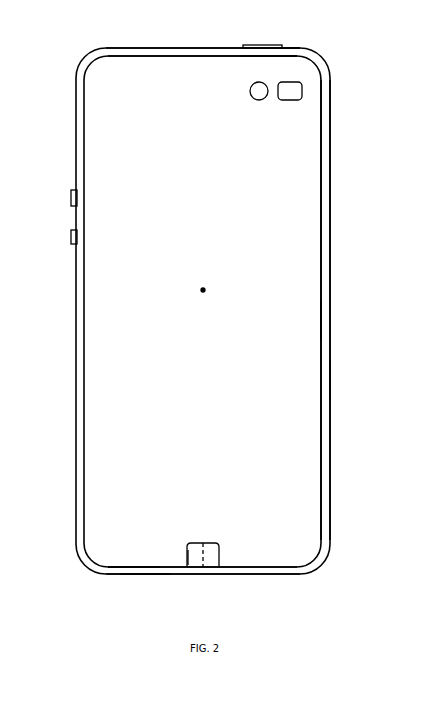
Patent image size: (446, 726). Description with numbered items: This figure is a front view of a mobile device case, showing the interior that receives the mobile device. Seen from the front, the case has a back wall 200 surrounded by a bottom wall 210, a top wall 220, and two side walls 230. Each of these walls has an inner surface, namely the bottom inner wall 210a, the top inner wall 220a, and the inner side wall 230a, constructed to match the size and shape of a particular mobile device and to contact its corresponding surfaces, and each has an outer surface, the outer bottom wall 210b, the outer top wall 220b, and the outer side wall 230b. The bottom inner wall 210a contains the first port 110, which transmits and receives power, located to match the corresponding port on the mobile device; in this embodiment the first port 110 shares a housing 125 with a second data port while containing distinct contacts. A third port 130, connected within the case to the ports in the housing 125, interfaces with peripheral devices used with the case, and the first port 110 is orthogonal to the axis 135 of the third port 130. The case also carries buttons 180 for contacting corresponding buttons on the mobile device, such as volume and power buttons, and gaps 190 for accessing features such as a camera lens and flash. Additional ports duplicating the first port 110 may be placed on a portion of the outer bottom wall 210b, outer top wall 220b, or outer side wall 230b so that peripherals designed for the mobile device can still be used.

The first port 110 is at (213, 557).
The housing 125 is at (216, 539).
The third port 130 is at (194, 559).
The axis 135 is at (192, 290).
The buttons 180 is at (240, 45).
The gaps 190 is at (268, 96).
The back wall 200 is at (285, 270).
The bottom wall 210 is at (124, 570).
The bottom inner wall 210a is at (145, 563).
The outer bottom wall 210b is at (140, 576).
The top wall 220 is at (291, 53).
The top inner wall 220a is at (268, 59).
The outer top wall 220b is at (293, 47).
The side walls 230 is at (322, 343).
The inner side wall 230a is at (323, 323).
The outer side wall 230b is at (333, 376).